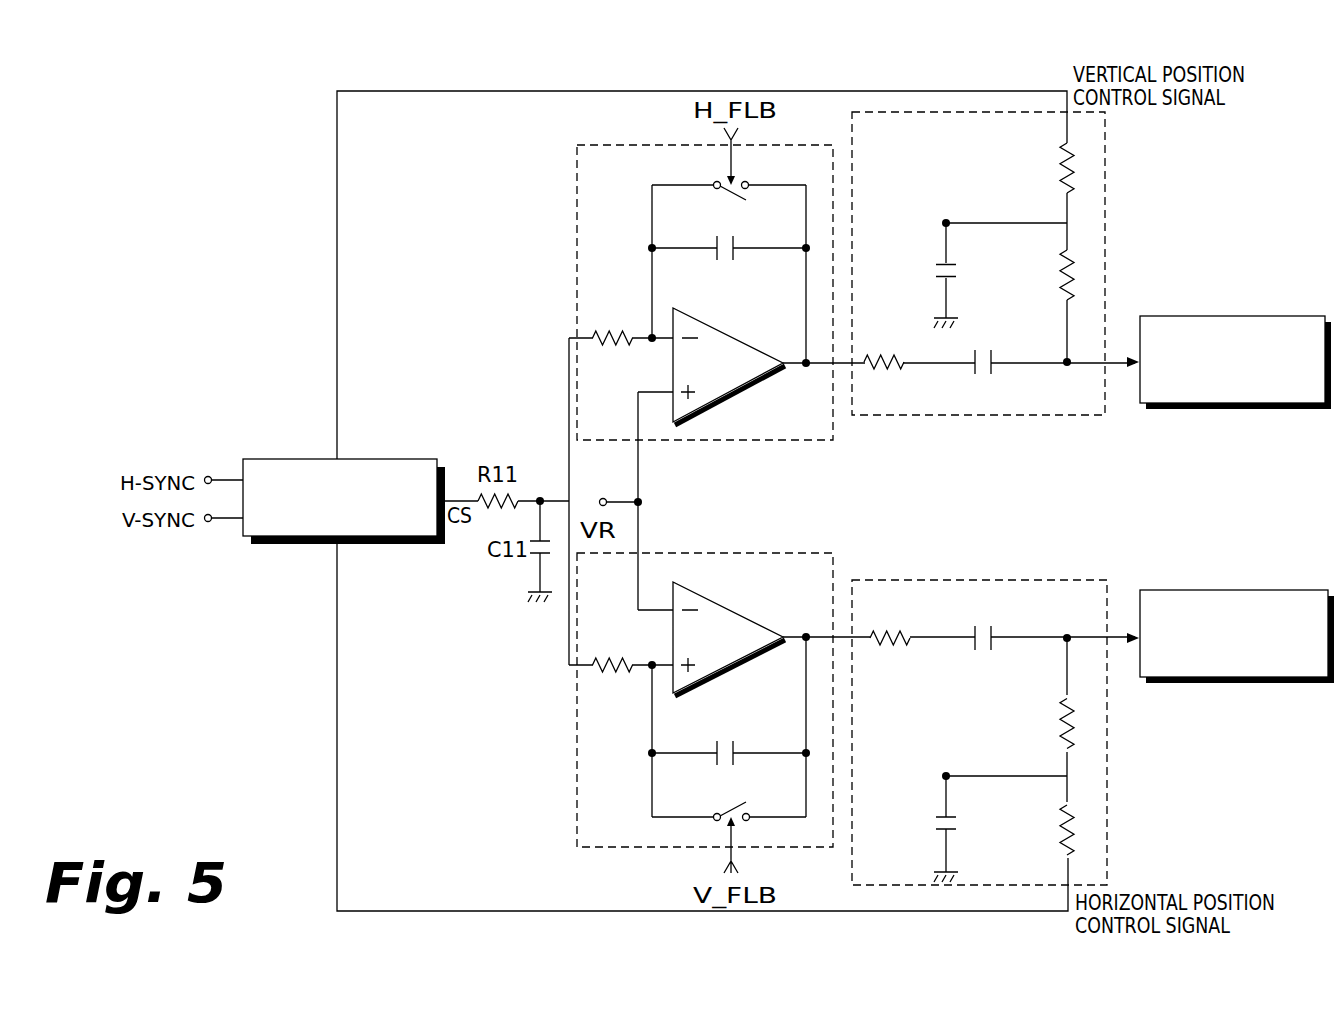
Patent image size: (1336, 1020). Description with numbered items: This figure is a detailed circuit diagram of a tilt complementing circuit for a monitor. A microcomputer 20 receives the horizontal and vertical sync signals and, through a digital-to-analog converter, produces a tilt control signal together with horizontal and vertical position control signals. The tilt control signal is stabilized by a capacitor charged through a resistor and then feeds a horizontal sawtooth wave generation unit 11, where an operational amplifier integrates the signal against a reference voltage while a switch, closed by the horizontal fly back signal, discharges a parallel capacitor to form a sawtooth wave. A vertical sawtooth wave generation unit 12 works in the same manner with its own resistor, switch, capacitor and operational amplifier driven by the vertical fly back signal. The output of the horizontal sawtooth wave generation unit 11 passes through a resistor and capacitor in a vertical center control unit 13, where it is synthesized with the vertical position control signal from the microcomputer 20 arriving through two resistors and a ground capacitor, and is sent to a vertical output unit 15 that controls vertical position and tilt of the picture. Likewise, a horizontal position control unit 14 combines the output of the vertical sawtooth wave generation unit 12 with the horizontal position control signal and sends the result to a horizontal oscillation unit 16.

The horizontal sawtooth wave generation unit 11 is at (577, 252).
The vertical sawtooth wave generation unit 12 is at (577, 780).
The vertical center control unit 13 is at (1105, 219).
The horizontal position control unit 14 is at (1107, 763).
The vertical output unit 15 is at (1275, 316).
The horizontal oscillation unit 16 is at (1275, 590).
The microcomputer 20 is at (380, 459).